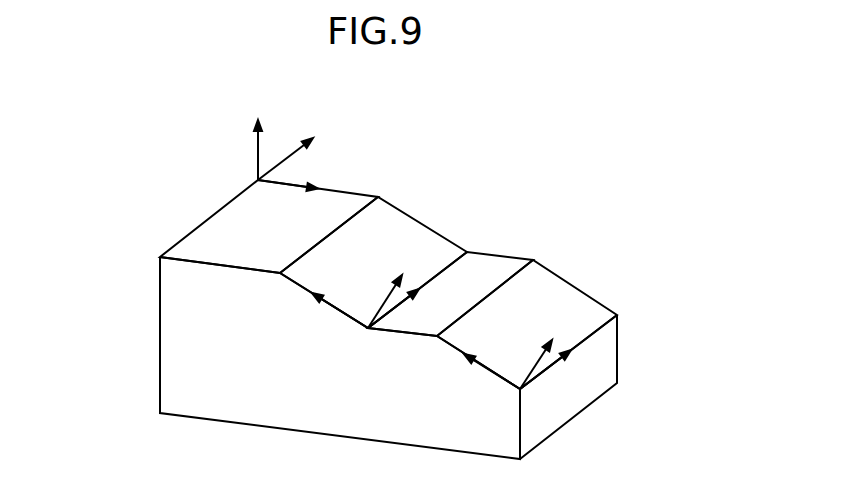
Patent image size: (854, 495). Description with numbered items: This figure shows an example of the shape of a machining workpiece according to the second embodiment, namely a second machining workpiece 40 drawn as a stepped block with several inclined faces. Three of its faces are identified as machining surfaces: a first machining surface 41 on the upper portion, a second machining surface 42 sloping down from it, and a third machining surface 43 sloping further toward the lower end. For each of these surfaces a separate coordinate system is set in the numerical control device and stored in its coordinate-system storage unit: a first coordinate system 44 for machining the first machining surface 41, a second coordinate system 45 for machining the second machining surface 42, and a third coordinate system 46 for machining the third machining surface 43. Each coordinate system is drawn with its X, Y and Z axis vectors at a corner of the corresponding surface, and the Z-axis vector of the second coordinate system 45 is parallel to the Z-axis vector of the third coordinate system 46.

The second machining workpiece 40 is at (160, 297).
The first machining surface 41 is at (219, 223).
The second machining surface 42 is at (388, 226).
The third machining surface 43 is at (551, 282).
The first coordinate system 44 is at (257, 178).
The second coordinate system 45 is at (368, 328).
The third coordinate system 46 is at (520, 389).